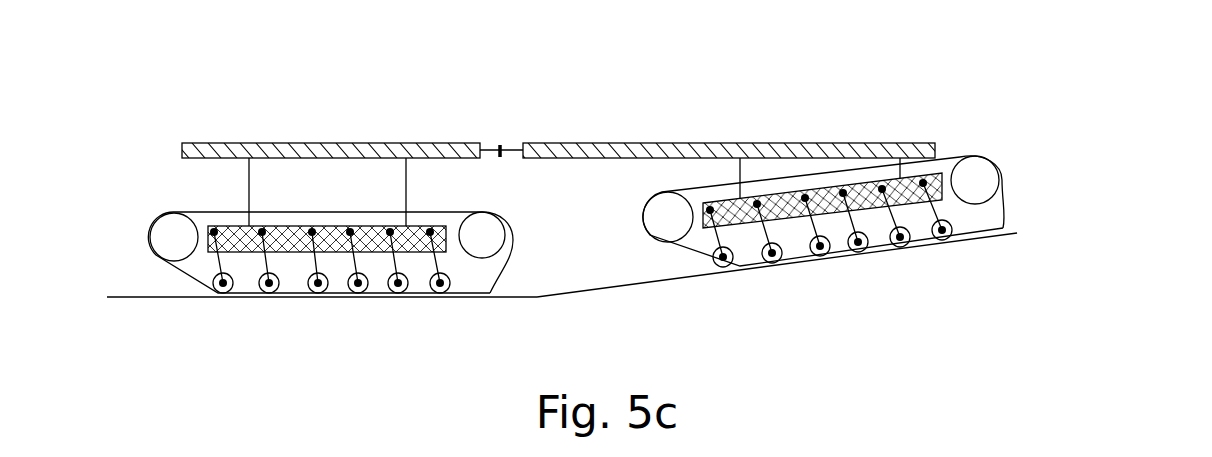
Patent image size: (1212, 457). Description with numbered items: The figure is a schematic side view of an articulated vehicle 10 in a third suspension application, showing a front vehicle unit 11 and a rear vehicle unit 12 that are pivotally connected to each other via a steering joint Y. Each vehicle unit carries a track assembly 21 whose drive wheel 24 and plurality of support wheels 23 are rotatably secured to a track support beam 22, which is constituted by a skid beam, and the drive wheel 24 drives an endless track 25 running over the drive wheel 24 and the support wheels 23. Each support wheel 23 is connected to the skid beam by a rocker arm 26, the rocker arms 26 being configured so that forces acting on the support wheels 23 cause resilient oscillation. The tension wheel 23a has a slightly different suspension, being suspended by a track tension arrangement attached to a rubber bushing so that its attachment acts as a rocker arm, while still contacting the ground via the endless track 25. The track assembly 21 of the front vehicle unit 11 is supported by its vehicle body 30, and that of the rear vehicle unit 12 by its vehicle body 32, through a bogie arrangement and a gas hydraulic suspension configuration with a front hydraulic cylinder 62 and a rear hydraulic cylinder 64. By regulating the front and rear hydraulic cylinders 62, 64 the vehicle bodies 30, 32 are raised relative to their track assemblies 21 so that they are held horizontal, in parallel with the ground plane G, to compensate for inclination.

The articulated vehicle 10 is at (827, 48).
The front vehicle unit 11 is at (249, 320).
The rear vehicle unit 12 is at (846, 292).
The track assembly 21 is at (166, 278).
The track support beam 22 is at (300, 222).
The support wheels 23 is at (358, 293).
The tension wheel 23a is at (493, 230).
The drive wheel 24 is at (176, 230).
The endless track 25 is at (516, 266).
The rocker arms 26 is at (399, 263).
The vehicle body 30 is at (297, 142).
The vehicle body 32 is at (787, 142).
The front hydraulic cylinder 62 is at (249, 193).
The rear hydraulic cylinder 64 is at (406, 194).
The ground plane G is at (177, 300).
The steering joint Y is at (504, 150).